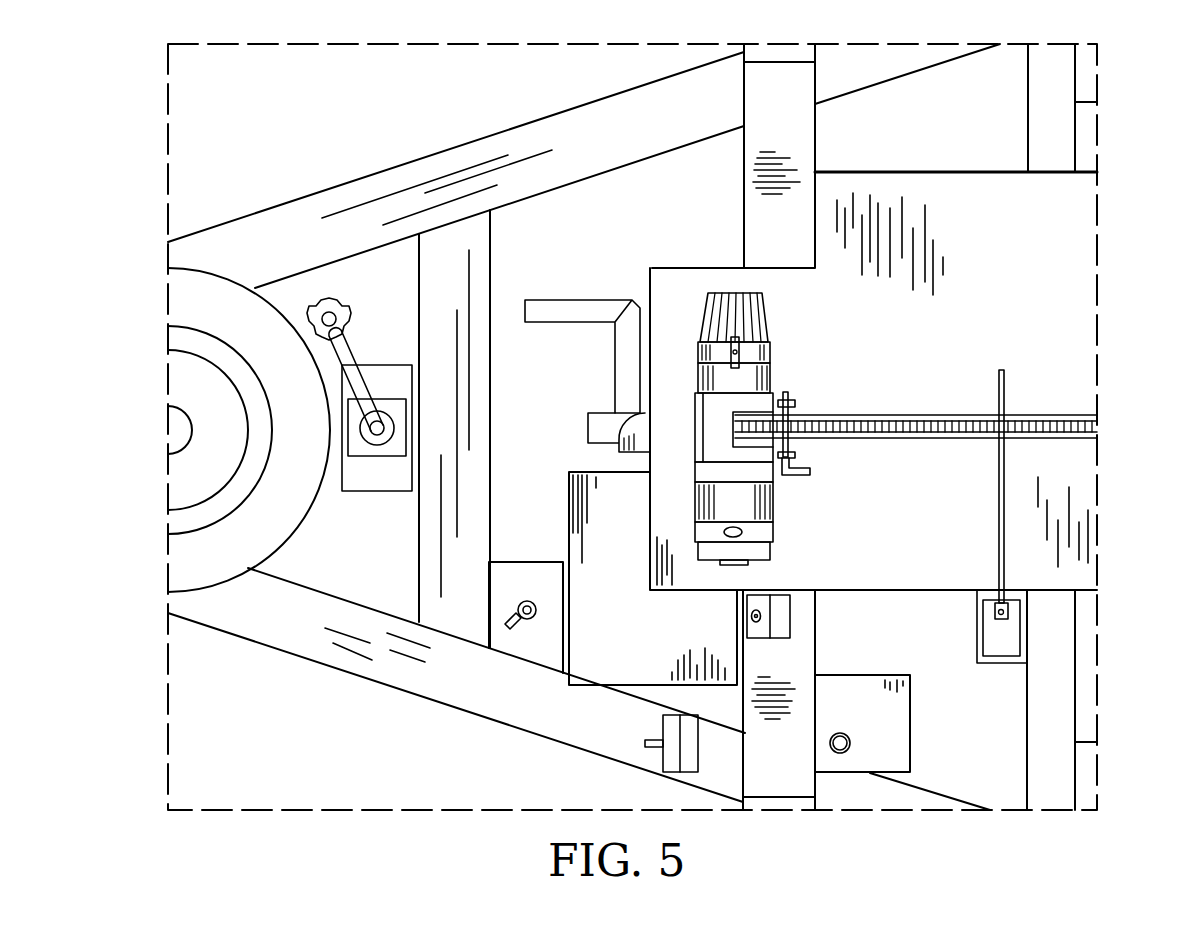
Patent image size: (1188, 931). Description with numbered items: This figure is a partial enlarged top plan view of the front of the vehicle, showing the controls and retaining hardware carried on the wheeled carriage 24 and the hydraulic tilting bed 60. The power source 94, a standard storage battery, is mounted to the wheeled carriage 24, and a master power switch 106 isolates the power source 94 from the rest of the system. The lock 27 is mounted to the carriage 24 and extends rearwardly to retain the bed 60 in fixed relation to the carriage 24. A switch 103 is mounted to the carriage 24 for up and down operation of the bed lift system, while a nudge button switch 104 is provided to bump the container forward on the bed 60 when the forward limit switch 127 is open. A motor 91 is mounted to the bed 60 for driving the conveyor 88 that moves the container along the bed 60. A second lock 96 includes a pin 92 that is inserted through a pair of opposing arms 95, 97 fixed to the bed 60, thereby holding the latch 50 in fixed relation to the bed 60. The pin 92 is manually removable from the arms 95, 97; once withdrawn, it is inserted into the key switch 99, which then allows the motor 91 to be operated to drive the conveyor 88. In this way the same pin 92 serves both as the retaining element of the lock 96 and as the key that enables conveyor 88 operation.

The wheeled carriage 24 is at (263, 626).
The lock 27 is at (556, 298).
The latch 50 is at (833, 437).
The hydraulic tilting bed 60 is at (808, 102).
The conveyor 88 is at (1068, 420).
The motor 91 is at (723, 378).
The pin 92 is at (787, 397).
The power source 94 is at (600, 660).
The opposing arm 95 is at (795, 402).
The lock 96 is at (757, 398).
The opposing arm 97 is at (800, 453).
The key switch 99 is at (882, 730).
The switch 103 is at (687, 763).
The nudge button switch 104 is at (765, 628).
The master power switch 106 is at (520, 636).
The forward limit switch 127 is at (1005, 635).